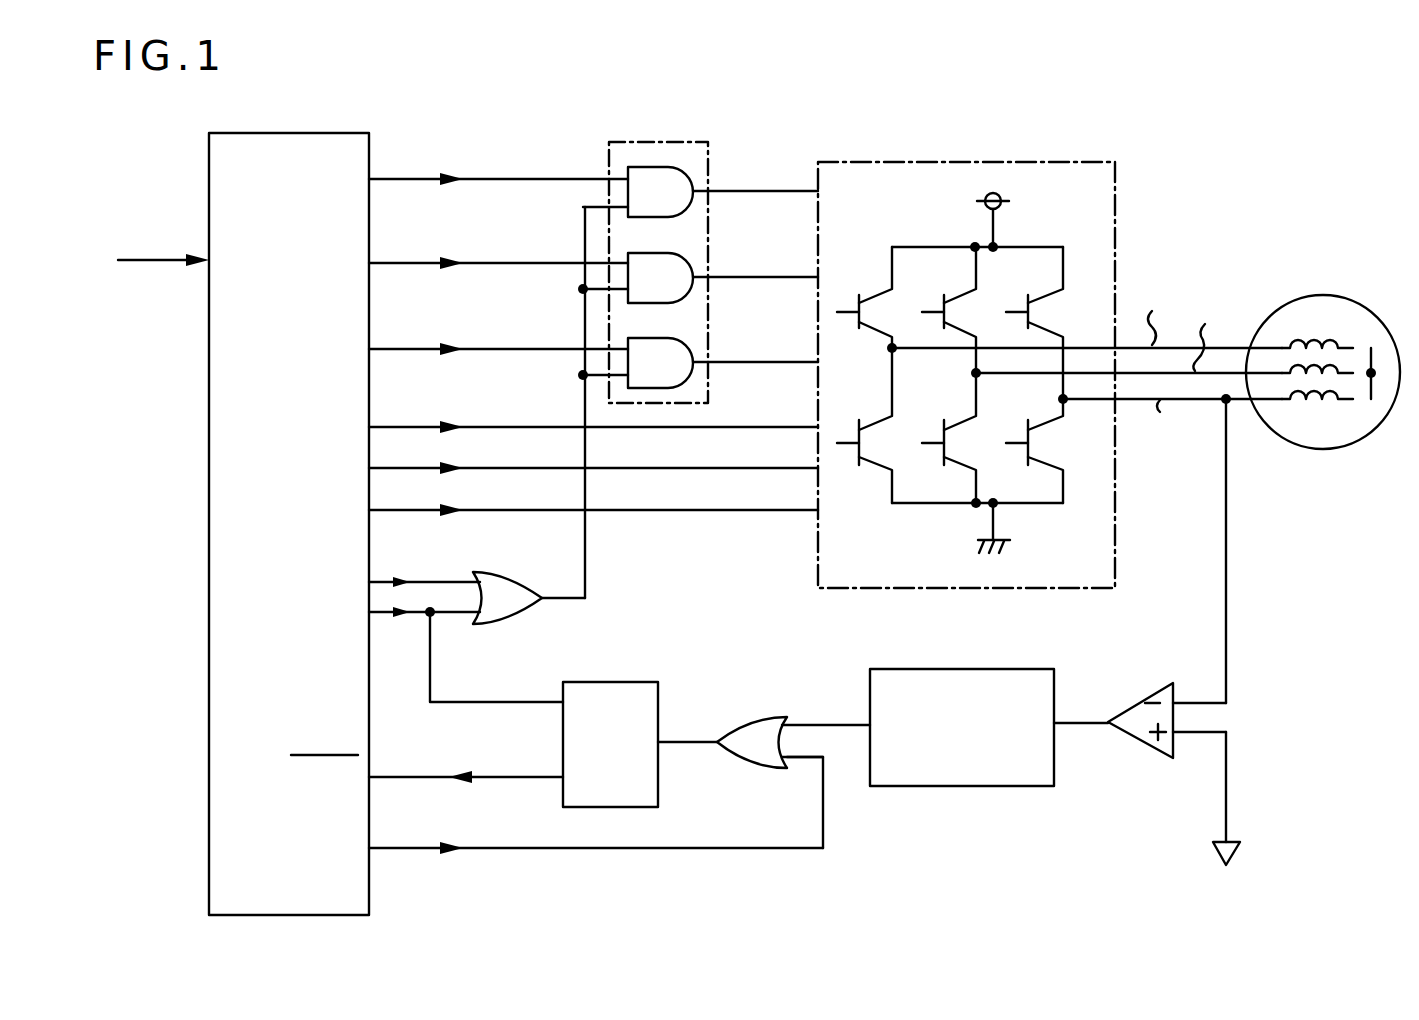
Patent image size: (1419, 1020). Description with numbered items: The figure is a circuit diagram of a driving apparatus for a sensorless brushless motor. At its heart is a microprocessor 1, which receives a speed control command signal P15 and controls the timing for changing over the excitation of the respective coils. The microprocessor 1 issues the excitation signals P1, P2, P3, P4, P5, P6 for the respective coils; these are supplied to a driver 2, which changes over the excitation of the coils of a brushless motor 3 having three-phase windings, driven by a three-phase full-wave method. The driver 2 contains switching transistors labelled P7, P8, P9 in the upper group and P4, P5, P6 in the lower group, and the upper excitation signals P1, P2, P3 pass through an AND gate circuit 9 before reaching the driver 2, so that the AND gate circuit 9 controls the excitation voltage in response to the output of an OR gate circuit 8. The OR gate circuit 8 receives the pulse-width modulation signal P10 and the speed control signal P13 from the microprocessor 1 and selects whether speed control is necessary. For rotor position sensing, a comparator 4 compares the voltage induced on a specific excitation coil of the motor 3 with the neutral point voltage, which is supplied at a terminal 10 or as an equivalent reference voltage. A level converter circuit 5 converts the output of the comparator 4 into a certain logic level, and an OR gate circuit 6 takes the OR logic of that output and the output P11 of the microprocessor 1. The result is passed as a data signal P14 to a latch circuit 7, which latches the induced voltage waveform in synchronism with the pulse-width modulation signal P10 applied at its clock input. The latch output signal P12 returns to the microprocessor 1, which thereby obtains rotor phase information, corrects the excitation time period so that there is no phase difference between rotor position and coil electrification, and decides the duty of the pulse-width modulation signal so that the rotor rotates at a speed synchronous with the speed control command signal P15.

The microprocessor 1 is at (209, 768).
The driver 2 is at (1012, 160).
The brushless motor 3 is at (1367, 313).
The comparator 4 is at (1152, 752).
The level converter circuit 5 is at (1010, 787).
The OR gate circuit 6 is at (768, 718).
The latch circuit 7 is at (620, 682).
The OR gate circuit 8 is at (538, 620).
The AND gate circuit 9 is at (672, 141).
The terminal 10 is at (1240, 850).
The excitation signal P1 is at (502, 181).
The excitation signal P2 is at (502, 265).
The excitation signal P3 is at (498, 351).
The excitation signal P4 is at (500, 428).
The excitation signal P5 is at (504, 475).
The excitation signal P6 is at (498, 518).
The AND gate output signal / upper transistor P7 is at (736, 188).
The AND gate output signal / upper transistor P8 is at (730, 275).
The AND gate output signal / upper transistor P9 is at (738, 361).
The pulse width modulation signal P10 is at (468, 700).
The output of the microprocessor P11 is at (501, 842).
The output signal of the latch circuit P12 is at (488, 780).
The signal for making speed control P13 is at (428, 580).
The data signal line P14 is at (678, 729).
The speed control command signal P15 is at (152, 260).